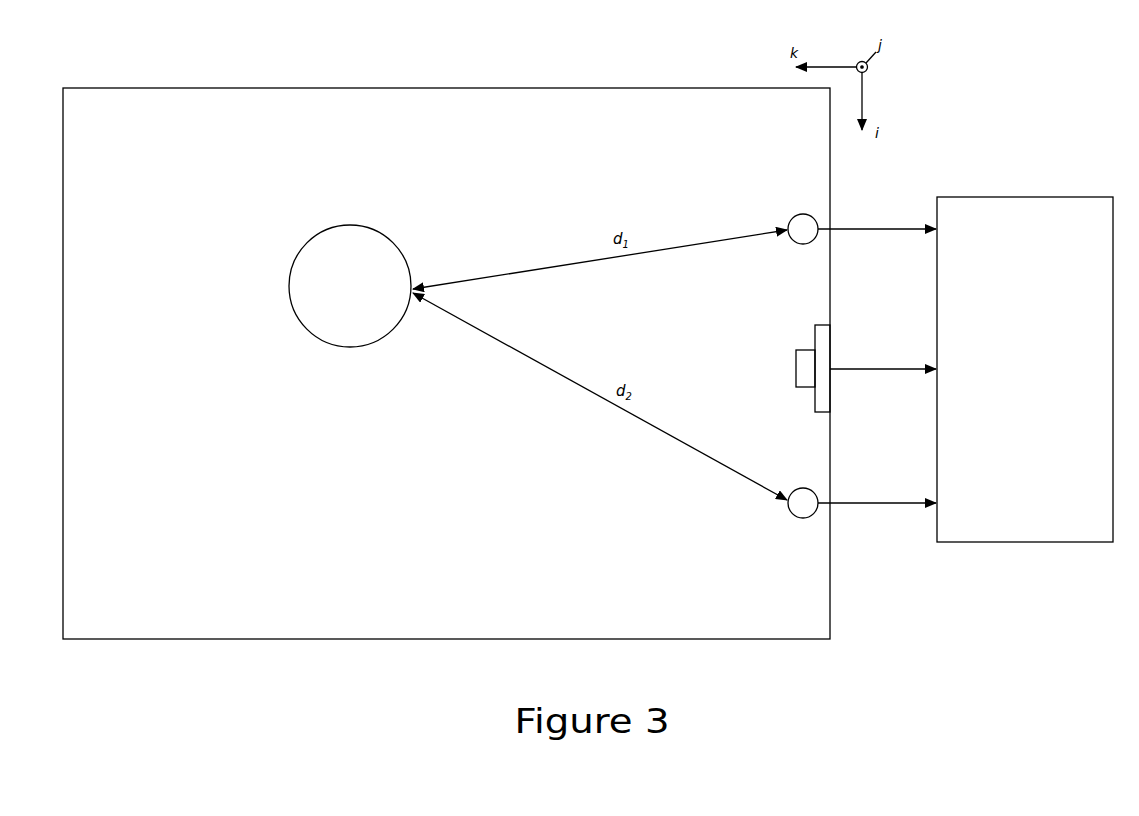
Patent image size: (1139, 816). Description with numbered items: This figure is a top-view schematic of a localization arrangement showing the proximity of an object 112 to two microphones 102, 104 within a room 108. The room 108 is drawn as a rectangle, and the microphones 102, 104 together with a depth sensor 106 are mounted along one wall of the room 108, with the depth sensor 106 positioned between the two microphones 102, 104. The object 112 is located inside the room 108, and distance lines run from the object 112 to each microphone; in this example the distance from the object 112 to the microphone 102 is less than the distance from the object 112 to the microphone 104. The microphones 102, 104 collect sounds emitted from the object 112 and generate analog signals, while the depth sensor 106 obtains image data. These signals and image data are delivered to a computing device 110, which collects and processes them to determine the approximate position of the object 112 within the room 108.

The microphone 102 is at (798, 214).
The microphone 104 is at (798, 517).
The depth sensor 106 is at (812, 335).
The room 108 is at (633, 88).
The computing device 110 is at (1045, 435).
The object 112 is at (350, 347).